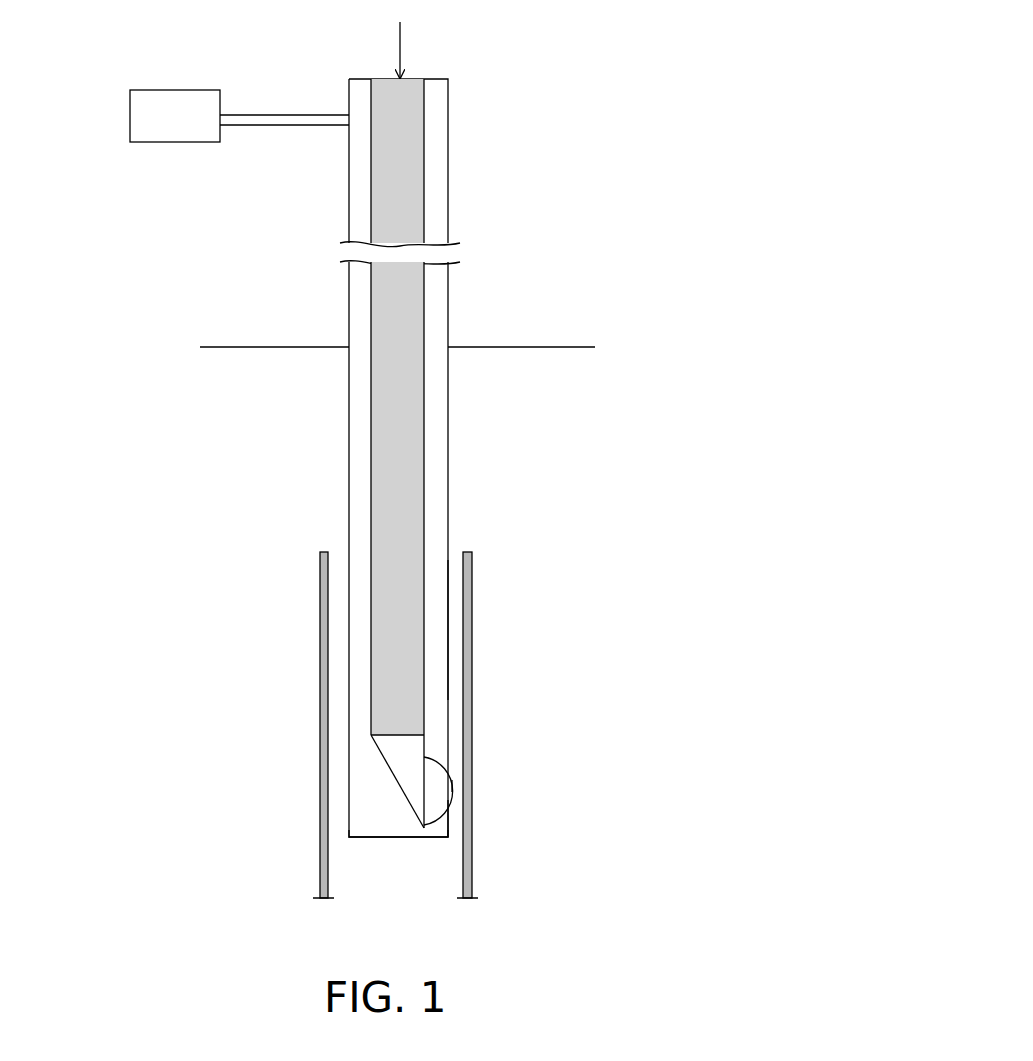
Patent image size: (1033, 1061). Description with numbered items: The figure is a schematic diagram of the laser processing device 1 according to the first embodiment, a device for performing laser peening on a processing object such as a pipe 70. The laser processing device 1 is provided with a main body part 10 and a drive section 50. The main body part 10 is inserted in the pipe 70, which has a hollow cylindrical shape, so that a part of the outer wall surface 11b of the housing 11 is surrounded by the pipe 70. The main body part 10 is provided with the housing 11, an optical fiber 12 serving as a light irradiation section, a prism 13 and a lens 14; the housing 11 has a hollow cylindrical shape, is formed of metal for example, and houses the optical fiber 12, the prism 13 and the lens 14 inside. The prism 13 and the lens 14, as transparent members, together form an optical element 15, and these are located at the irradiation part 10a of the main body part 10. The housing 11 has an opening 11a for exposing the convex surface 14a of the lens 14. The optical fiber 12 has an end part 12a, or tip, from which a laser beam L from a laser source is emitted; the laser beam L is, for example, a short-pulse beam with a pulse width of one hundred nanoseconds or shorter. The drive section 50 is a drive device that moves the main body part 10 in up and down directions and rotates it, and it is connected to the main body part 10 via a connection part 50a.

The laser processing device 1 is at (668, 98).
The laser beam L is at (404, 44).
The main body part 10 is at (346, 470).
The irradiation part 10a is at (367, 768).
The housing 11 is at (449, 192).
The opening 11a is at (450, 818).
The outer wall surface 11b is at (449, 623).
The optical fiber 12 is at (416, 128).
The end part 12a is at (363, 735).
The prism 13 is at (392, 766).
The lens 14 is at (431, 812).
The convex surface 14a is at (450, 772).
The optical element 15 is at (456, 890).
The drive section 50 is at (130, 118).
The connection part 50a is at (268, 113).
The pipe 70 is at (323, 552).